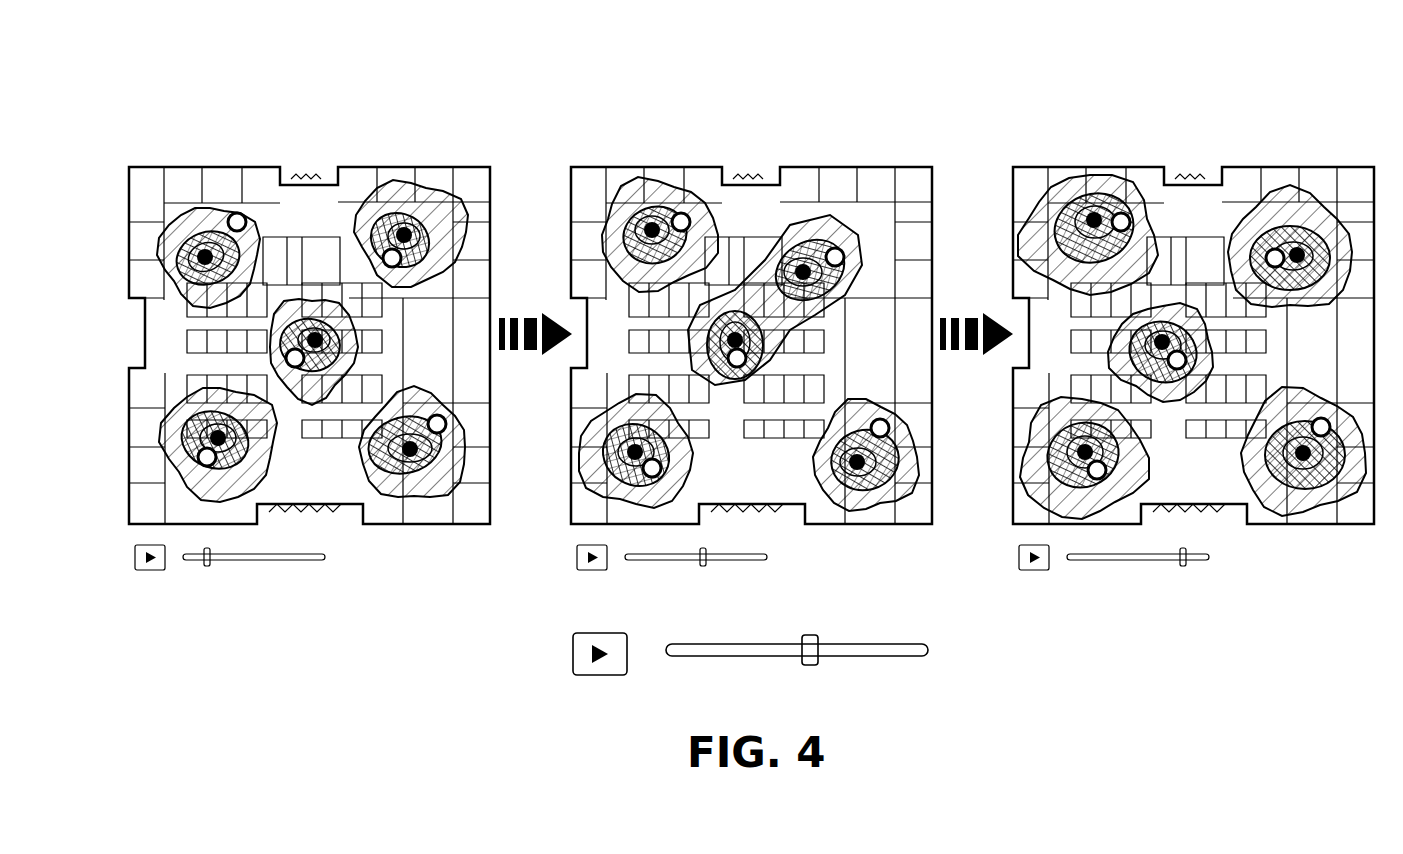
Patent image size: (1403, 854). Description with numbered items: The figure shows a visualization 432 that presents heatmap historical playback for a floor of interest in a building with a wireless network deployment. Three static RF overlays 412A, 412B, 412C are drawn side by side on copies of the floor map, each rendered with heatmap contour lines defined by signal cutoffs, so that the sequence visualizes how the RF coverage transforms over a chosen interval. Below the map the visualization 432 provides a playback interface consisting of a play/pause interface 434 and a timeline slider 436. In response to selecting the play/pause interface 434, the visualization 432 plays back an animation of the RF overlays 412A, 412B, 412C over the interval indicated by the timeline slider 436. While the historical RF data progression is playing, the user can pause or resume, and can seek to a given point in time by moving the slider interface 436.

The RF overlay 412A is at (398, 167).
The RF overlay 412B is at (840, 167).
The RF overlay 412C is at (1282, 167).
The visualization 432 is at (971, 101).
The play/pause interface 434 is at (573, 655).
The timeline slider 436 is at (893, 643).